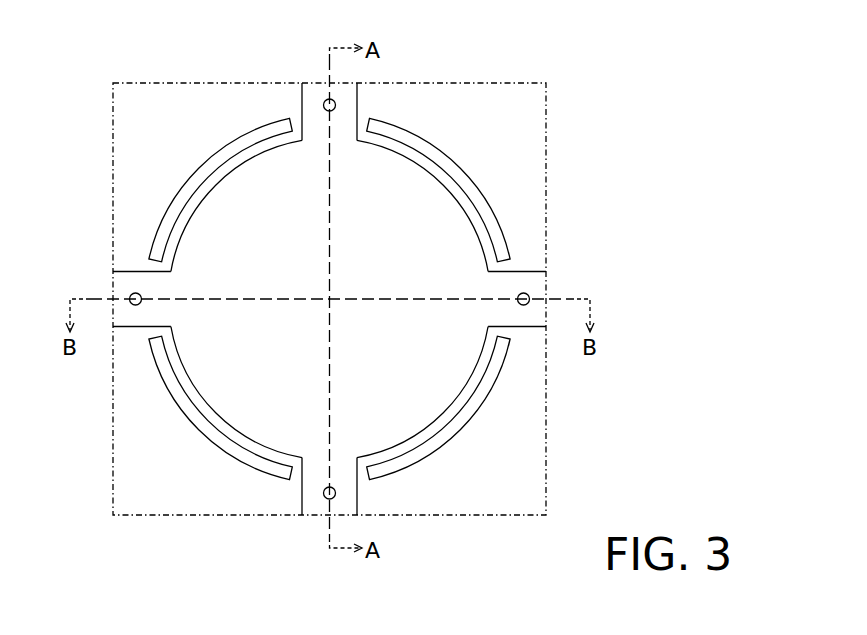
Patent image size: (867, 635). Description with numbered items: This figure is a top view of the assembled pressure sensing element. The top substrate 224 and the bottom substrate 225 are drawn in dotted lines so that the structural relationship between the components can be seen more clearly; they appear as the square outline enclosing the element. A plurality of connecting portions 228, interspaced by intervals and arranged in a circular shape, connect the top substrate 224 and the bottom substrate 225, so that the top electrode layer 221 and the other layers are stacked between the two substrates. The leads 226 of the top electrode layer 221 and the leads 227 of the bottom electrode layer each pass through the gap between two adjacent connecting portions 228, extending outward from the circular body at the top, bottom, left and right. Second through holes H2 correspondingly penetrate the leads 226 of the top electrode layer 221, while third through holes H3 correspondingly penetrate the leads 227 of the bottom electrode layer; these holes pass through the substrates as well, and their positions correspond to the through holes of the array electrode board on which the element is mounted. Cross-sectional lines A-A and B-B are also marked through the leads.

The top electrode layer 221 is at (425, 390).
The top substrate 224 is at (393, 299).
The bottom substrate 225 is at (546, 172).
The leads of the top electrode layer 226 is at (348, 104).
The leads of the bottom electrode layer 227 is at (120, 287).
The connecting portions 228 is at (167, 220).
The second through holes H2 is at (325, 99).
The third through holes H3 is at (134, 292).